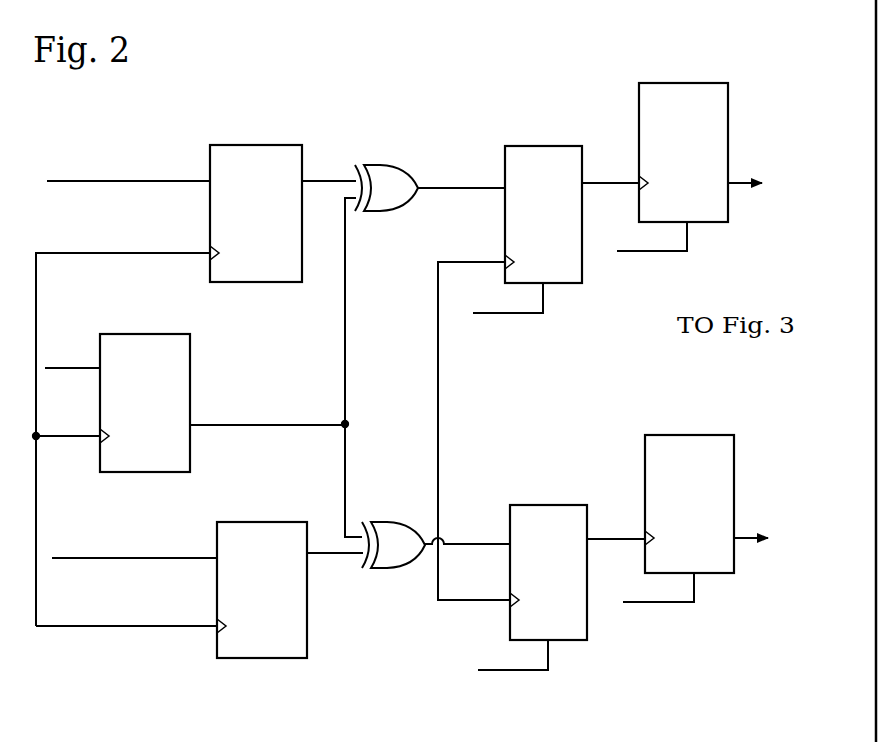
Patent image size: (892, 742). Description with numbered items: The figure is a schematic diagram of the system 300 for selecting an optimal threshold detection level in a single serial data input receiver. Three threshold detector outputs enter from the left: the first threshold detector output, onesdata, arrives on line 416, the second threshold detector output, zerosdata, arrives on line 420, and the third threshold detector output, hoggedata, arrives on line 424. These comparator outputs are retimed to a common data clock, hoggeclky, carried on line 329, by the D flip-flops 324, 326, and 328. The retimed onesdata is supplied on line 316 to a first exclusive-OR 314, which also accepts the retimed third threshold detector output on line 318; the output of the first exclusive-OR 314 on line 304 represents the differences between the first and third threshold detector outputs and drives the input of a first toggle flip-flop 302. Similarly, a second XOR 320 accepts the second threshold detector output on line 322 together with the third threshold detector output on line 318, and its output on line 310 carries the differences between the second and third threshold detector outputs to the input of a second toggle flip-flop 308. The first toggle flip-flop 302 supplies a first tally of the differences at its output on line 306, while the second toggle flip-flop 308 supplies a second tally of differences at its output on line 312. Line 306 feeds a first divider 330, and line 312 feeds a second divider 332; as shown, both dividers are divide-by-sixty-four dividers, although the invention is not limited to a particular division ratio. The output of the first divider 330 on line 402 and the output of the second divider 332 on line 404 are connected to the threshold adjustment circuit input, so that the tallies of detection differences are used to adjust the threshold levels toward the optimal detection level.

The system 300 is at (260, 82).
The first toggle flip-flop 302 is at (543, 214).
The line 304 is at (447, 186).
The line 306 is at (598, 181).
The second toggle flip-flop 308 is at (548, 572).
The line 310 is at (485, 546).
The line 312 is at (605, 537).
The first exclusive-OR 314 is at (387, 165).
The line 316 is at (330, 179).
The line 318 is at (262, 428).
The second XOR 320 is at (385, 569).
The line 322 is at (342, 557).
The D flip-flop 324 is at (256, 213).
The D flip-flop 326 is at (145, 403).
The D flip-flop 328 is at (262, 590).
The line 329 is at (130, 629).
The first divider 330 is at (683, 152).
The second divider 332 is at (689, 504).
The line 402 is at (745, 180).
The line 404 is at (750, 536).
The line 416 is at (78, 185).
The line 420 is at (130, 561).
The line 424 is at (80, 371).